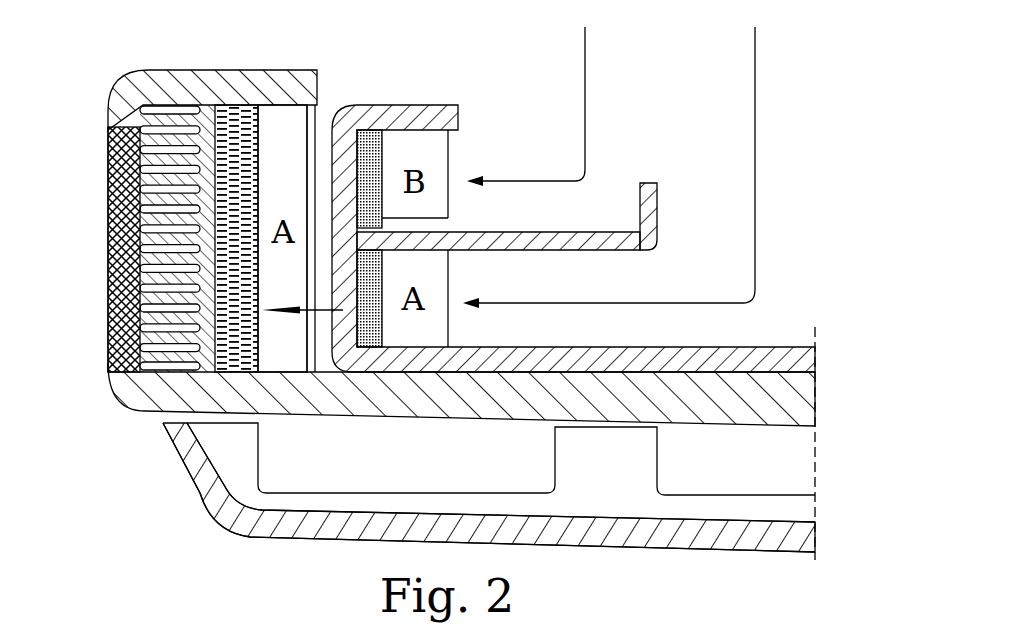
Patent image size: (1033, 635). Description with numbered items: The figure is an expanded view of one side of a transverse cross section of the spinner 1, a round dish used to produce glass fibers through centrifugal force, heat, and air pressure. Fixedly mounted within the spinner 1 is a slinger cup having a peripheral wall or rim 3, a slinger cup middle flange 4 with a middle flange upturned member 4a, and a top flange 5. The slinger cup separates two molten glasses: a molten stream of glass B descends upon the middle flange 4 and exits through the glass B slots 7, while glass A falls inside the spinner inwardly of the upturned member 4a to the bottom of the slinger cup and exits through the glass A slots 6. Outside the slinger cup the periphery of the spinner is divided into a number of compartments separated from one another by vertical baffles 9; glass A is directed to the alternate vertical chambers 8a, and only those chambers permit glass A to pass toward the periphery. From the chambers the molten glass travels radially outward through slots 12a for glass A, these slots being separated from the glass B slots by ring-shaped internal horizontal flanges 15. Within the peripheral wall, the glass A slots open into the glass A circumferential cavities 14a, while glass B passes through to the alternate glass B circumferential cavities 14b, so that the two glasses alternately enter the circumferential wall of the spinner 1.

The spinner 1 is at (140, 392).
The peripheral wall 3 is at (448, 217).
The slinger cup middle flange 4 is at (555, 238).
The middle flange upturned member 4a is at (656, 200).
The top flange 5 is at (377, 112).
The glass A slots 6 is at (343, 278).
The glass B slots 7 is at (340, 188).
The vertical chambers 8a is at (277, 137).
The vertical baffles 9 is at (307, 250).
The slots 12a is at (213, 160).
The circumferential cavities 14a is at (160, 130).
The circumferential cavities 14b is at (112, 183).
The horizontal flanges 15 is at (108, 360).